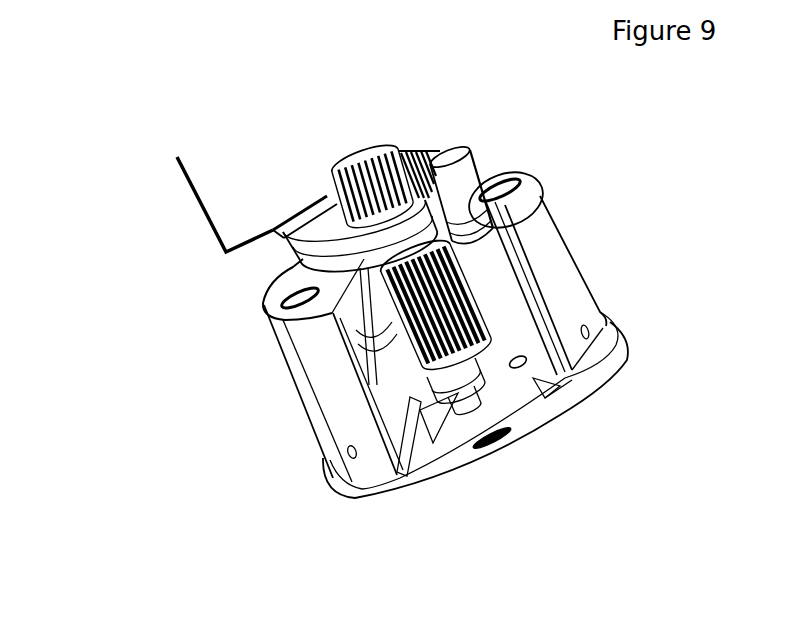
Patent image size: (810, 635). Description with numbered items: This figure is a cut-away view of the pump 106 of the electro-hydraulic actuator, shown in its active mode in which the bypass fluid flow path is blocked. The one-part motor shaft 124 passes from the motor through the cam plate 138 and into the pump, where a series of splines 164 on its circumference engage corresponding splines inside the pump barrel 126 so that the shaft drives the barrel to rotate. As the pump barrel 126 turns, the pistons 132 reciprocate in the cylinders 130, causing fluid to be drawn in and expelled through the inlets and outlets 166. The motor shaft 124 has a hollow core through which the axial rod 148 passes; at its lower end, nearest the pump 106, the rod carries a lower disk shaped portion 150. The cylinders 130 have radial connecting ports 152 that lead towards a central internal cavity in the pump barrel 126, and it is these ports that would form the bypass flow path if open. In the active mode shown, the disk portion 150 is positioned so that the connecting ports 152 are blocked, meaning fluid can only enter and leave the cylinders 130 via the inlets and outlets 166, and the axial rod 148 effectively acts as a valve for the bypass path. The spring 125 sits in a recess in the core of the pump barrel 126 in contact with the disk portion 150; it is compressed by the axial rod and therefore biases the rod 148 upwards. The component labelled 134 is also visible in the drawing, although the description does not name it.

The pump 106 is at (181, 123).
The cam plate 138 is at (223, 197).
The collar 134 is at (300, 246).
The pistons 132 is at (458, 198).
The splines 164 is at (456, 283).
The motor shaft 124 is at (320, 275).
The pump barrel 126 is at (340, 415).
The cylinders 130 is at (527, 325).
The spring 125 is at (515, 412).
The inlets and outlets 166 is at (497, 447).
The connecting ports 152 is at (527, 363).
The lower disk shaped portion 150 is at (468, 428).
The axial rod 148 is at (412, 462).